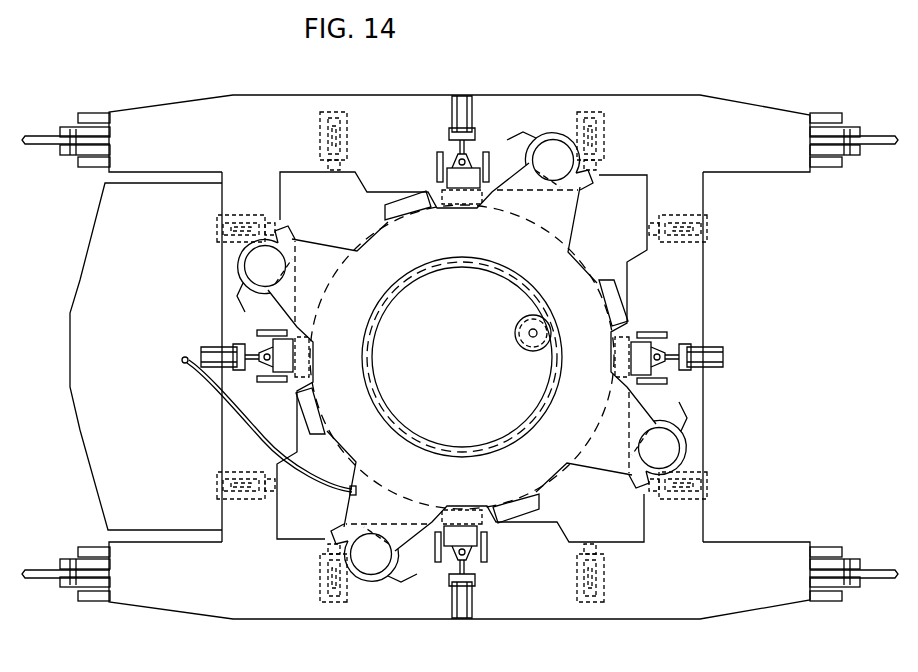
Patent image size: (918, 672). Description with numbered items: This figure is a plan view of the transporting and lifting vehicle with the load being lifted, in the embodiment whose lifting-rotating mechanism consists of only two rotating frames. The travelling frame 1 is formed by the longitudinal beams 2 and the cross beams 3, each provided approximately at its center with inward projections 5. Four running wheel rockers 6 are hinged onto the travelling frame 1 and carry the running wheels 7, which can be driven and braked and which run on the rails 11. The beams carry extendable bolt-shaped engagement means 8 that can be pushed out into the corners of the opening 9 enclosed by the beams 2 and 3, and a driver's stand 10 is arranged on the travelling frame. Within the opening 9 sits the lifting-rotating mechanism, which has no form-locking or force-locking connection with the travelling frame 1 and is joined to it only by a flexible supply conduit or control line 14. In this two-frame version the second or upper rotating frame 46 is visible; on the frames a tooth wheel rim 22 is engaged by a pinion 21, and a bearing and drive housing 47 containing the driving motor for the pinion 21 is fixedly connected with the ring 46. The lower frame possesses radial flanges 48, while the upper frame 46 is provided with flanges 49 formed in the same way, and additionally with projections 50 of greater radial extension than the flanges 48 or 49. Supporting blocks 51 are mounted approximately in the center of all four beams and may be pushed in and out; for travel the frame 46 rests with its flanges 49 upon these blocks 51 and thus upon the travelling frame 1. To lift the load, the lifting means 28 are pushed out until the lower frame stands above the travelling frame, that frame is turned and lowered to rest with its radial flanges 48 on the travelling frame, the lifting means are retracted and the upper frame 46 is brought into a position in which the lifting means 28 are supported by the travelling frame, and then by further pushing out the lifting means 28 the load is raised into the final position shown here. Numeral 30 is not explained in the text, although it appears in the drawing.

The travelling frame 1 is at (727, 101).
The longitudinal beams 2 is at (298, 118).
The cross beams 3 is at (243, 517).
The inward projections 5 is at (295, 432).
The running wheel rockers 6 is at (92, 598).
The running wheels 7 is at (73, 588).
The bolt-shaped engagement means 8 is at (330, 110).
The opening 9 is at (632, 512).
The driver's stand 10 is at (94, 367).
The rails 11 is at (38, 135).
The flexible supply conduit or control line 14 is at (275, 452).
The pinion 21 is at (524, 348).
The tooth wheel rim 22 is at (531, 418).
The lifting means 28 is at (553, 158).
The clamp arm 30 is at (520, 145).
The second or upper rotating frame 46 is at (555, 277).
The bearing and drive housing 47 is at (517, 332).
The radial flanges 48 is at (435, 192).
The flanges 49 is at (405, 210).
The projections 50 is at (508, 187).
The supporting blocks 51 is at (475, 175).